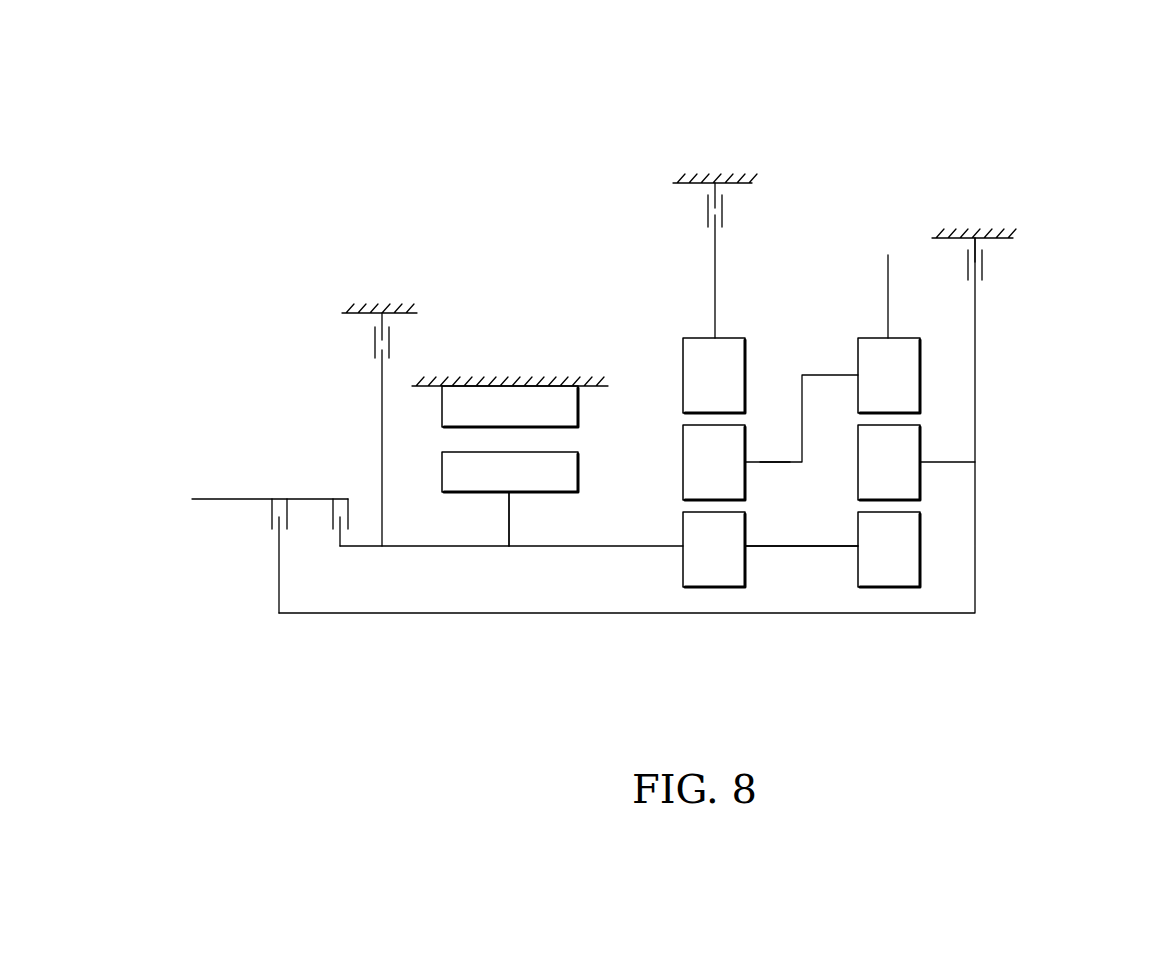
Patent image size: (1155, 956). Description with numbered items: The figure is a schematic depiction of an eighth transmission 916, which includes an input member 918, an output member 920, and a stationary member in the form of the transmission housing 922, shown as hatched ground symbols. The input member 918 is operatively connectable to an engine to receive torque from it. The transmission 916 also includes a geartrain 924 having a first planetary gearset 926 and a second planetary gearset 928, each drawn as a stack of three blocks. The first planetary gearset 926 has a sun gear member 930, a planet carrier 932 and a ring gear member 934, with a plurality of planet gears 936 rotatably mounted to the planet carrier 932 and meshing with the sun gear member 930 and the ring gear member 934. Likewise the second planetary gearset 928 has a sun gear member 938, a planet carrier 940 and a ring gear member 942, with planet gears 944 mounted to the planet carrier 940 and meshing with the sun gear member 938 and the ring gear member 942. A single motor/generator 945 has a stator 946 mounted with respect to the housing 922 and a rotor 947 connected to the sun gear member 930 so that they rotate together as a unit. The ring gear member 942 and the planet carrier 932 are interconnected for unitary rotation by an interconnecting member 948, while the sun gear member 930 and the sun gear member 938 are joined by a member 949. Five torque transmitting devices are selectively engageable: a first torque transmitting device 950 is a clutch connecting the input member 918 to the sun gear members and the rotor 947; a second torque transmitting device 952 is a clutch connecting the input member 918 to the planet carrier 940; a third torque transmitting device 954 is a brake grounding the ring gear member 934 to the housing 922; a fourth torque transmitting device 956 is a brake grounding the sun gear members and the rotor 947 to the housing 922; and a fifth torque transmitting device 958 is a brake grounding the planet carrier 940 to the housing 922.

The transmission 916 is at (910, 108).
The input member 918 is at (237, 499).
The output member 920 is at (890, 263).
The transmission housing 922 is at (350, 322).
The geartrain 924 is at (756, 640).
The first planetary gearset 926 is at (733, 316).
The second planetary gearset 928 is at (875, 303).
The sun gear member 930 is at (682, 527).
The planet carrier 932 is at (773, 462).
The ring gear member 934 is at (682, 378).
The planet gears 936 is at (682, 460).
The sun gear member 938 is at (921, 548).
The planet carrier 940 is at (947, 460).
The ring gear member 942 is at (921, 377).
The planet gears 944 is at (921, 445).
The motor/generator 945 is at (433, 442).
The stator 946 is at (510, 406).
The rotor 947 is at (510, 499).
The interconnecting member 948 is at (837, 375).
The member 949 is at (840, 547).
The first torque transmitting device 950 is at (325, 519).
The second torque transmitting device 952 is at (261, 517).
The third torque transmitting device 954 is at (695, 211).
The fourth torque transmitting device 956 is at (365, 345).
The fifth torque transmitting device 958 is at (1002, 279).